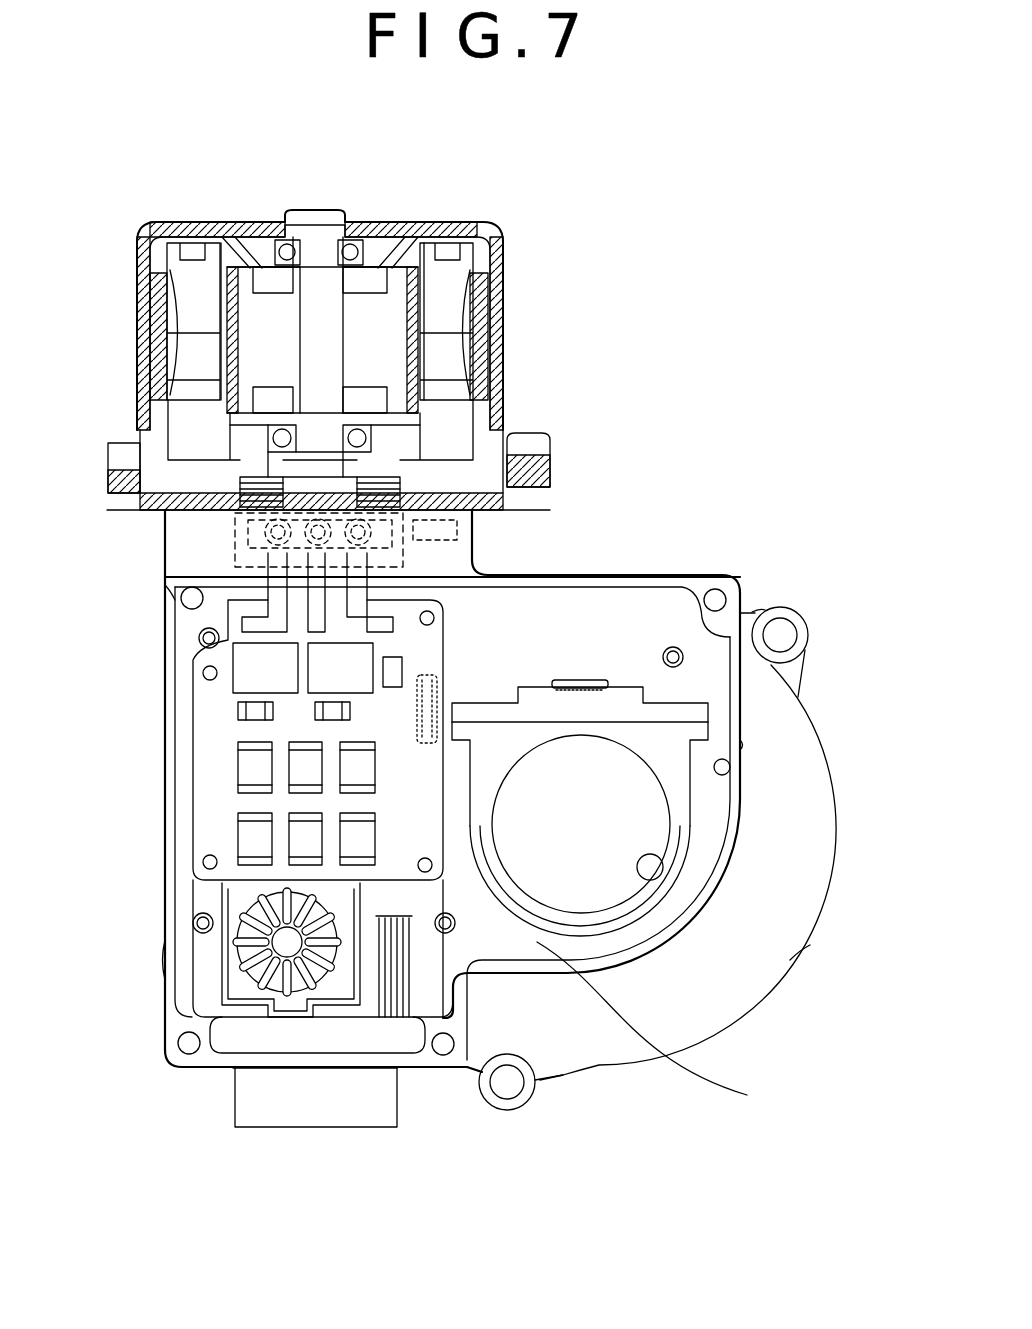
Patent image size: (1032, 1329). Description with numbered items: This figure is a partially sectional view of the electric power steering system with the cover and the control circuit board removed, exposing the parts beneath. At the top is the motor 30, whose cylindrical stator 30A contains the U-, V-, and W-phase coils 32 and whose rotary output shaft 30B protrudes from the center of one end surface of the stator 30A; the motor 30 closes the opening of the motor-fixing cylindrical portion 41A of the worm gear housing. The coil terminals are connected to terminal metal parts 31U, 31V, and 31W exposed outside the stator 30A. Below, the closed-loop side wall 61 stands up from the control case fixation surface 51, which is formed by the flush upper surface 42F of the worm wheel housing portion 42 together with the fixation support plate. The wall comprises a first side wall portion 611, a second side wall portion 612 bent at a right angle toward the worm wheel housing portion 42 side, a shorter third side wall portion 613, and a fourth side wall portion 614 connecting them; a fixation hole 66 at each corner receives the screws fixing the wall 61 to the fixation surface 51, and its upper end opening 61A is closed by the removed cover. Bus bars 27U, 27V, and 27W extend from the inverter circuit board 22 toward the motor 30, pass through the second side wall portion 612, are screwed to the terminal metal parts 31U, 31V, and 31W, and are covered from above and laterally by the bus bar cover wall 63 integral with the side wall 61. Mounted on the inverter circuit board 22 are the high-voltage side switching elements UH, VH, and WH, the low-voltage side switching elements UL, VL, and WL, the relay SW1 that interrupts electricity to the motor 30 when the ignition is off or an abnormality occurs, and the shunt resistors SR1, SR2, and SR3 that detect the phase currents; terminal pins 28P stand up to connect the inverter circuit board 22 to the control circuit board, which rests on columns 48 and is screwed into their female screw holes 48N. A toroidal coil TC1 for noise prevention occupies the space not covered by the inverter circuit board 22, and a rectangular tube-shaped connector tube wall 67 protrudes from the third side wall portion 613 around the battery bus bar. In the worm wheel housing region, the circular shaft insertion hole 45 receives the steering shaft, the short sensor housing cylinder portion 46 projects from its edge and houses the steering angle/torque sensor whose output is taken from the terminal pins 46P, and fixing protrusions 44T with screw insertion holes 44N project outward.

The motor 30 is at (327, 348).
The U-, V-, and W-phase coils 32 is at (185, 303).
The cylindrical stator 30A is at (500, 345).
The rotary output shaft 30B is at (200, 470).
The motor-fixing cylindrical portion 41A is at (160, 500).
The terminal metal part 31U is at (235, 548).
The terminal metal part 31V is at (470, 510).
The terminal metal part 31W is at (460, 533).
The bus bar cover wall 63 is at (192, 590).
The bus bar 27U is at (267, 595).
The bus bar 27V is at (316, 597).
The bus bar 27W is at (358, 598).
The fixation hole 66 is at (190, 600).
The column 48 is at (205, 676).
The female screw hole 48N is at (207, 645).
The relay SW1 is at (252, 682).
The inverter circuit board 22 is at (255, 717).
The shunt resistor SR1 is at (250, 712).
The shunt resistor SR2 is at (350, 713).
The shunt resistor SR3 is at (403, 667).
The terminal pins 28P is at (437, 700).
The terminal pins 46P is at (580, 680).
The switching element UH is at (252, 757).
The switching element VH is at (302, 757).
The switching element WH is at (358, 766).
The switching element UL is at (252, 836).
The switching element VL is at (302, 836).
The switching element WL is at (358, 844).
The first side wall portion 611 is at (165, 958).
The second side wall portion 612 is at (730, 590).
The third side wall portion 613 is at (363, 1062).
The fourth side wall portion 614 is at (735, 740).
The toroidal coil TC1 is at (240, 988).
The connector tube wall 67 is at (245, 1097).
The fixing protrusion 44T is at (740, 612).
The screw insertion hole 44N is at (783, 633).
The closed-loop side wall 61 is at (748, 716).
The upper end opening 61A is at (730, 770).
The sensor housing cylinder portion 46 is at (680, 810).
The circular shaft insertion hole 45 is at (650, 882).
The worm wheel housing portion 42 is at (775, 987).
The upper surface 42F is at (748, 952).
The control case fixation surface 51 is at (661, 1027).